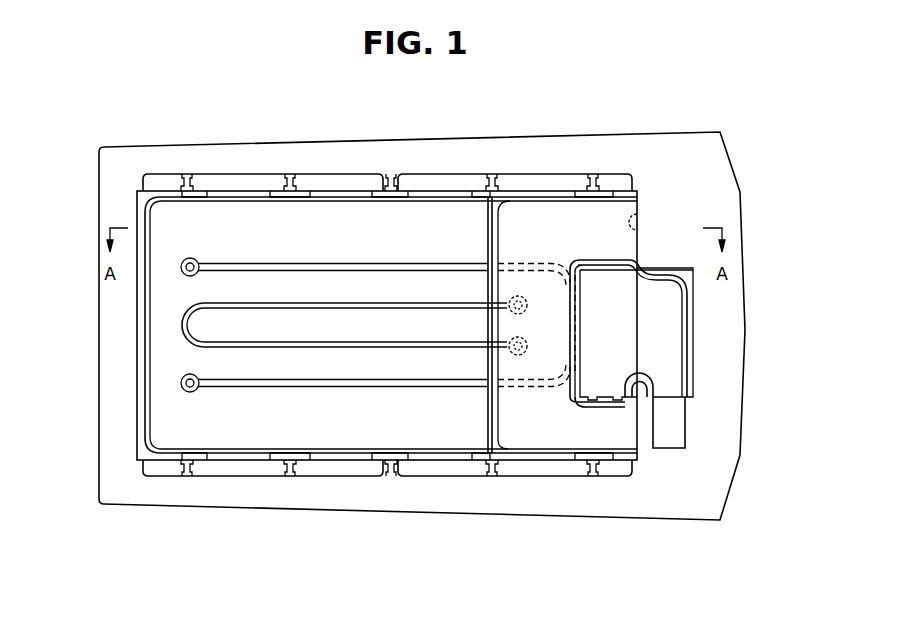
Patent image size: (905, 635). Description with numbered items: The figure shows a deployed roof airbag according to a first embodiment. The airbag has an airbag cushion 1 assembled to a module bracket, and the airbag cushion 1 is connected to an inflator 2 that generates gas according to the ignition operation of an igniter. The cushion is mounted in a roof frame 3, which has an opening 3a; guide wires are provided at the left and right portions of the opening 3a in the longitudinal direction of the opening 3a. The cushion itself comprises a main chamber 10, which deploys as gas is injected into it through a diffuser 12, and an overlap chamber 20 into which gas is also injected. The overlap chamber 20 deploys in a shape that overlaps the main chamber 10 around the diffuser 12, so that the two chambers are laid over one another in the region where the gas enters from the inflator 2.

The airbag cushion 1 is at (126, 352).
The inflator 2 is at (667, 440).
The roof frame 3 is at (99, 407).
The opening 3a is at (243, 473).
The main chamber 10 is at (228, 193).
The diffuser 12 is at (660, 349).
The overlap chamber 20 is at (500, 252).